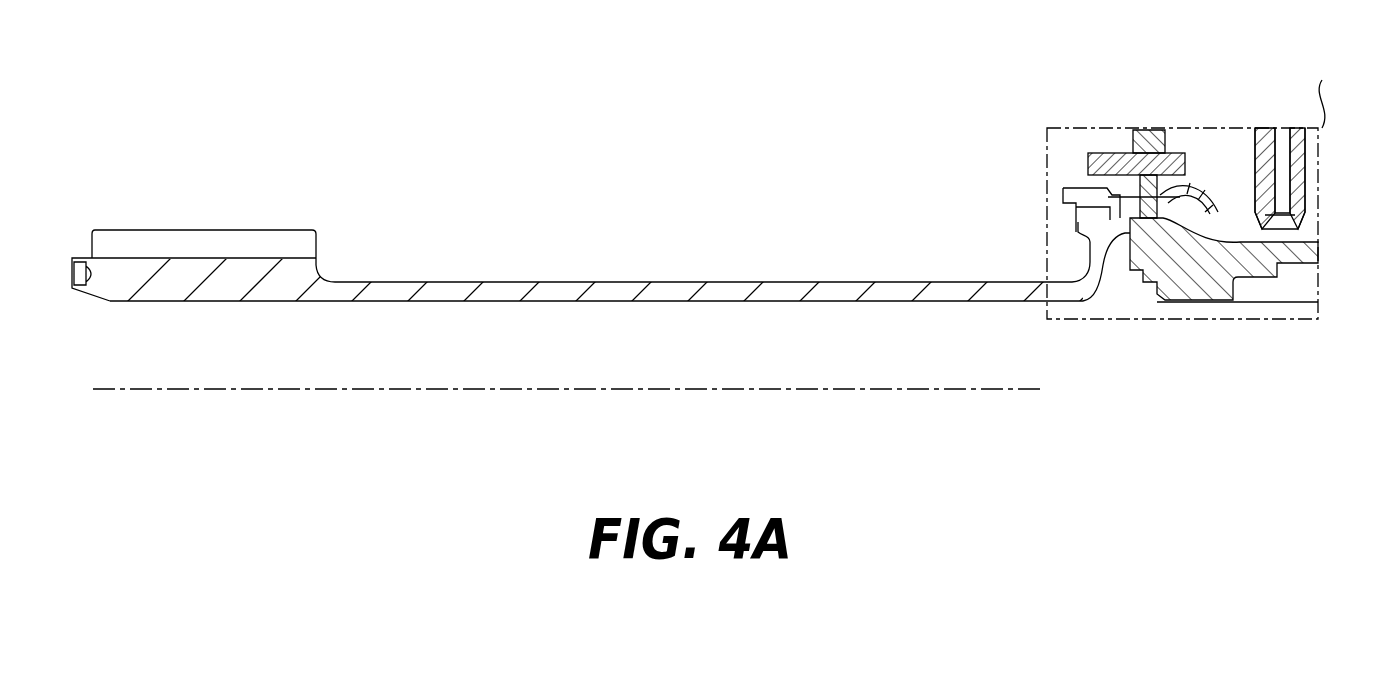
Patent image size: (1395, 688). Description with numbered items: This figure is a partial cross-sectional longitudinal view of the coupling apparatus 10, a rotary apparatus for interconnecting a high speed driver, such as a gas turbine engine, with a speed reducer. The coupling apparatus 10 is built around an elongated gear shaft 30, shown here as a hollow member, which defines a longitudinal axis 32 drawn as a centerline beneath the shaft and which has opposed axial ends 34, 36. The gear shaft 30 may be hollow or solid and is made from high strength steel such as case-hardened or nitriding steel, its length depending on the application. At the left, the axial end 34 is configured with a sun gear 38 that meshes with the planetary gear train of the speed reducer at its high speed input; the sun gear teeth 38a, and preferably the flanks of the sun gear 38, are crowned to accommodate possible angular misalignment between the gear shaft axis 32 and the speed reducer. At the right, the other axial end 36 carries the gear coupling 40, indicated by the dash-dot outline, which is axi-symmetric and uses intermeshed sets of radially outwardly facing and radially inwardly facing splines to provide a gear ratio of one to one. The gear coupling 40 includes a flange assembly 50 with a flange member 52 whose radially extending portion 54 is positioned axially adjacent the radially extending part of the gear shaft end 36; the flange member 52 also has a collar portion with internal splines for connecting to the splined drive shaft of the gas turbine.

The coupling apparatus 10 is at (741, 150).
The gear shaft 30 is at (556, 292).
The longitudinal axis 32 is at (136, 388).
The axial end 34 is at (222, 303).
The axial end 36 is at (1084, 294).
The sun gear 38 is at (291, 275).
The sun gear teeth 38a is at (232, 243).
The gear coupling 40 is at (1023, 109).
The flange assembly 50 is at (1196, 163).
The flange member 52 is at (1198, 293).
The radially extending portion 54 is at (1193, 226).